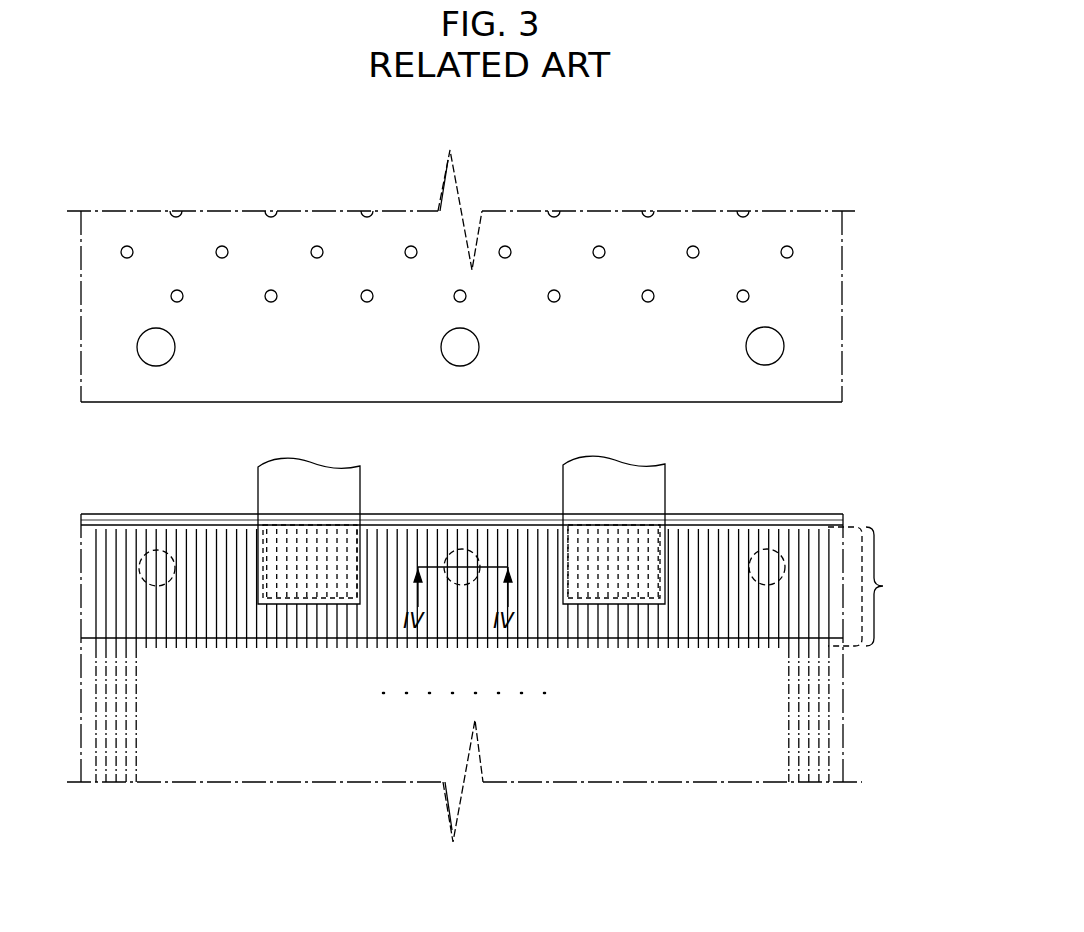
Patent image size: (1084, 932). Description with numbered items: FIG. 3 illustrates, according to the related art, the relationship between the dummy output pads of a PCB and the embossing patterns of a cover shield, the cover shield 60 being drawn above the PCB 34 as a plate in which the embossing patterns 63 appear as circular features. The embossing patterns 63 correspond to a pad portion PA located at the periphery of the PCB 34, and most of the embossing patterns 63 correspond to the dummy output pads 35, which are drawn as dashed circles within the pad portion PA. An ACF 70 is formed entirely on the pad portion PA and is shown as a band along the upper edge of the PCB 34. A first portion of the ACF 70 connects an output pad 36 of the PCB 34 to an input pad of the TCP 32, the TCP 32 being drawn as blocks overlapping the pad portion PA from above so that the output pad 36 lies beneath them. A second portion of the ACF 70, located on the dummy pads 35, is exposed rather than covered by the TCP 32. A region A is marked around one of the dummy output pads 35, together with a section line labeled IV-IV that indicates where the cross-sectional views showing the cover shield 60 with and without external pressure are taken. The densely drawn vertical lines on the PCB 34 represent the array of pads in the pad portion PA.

The cooling plate 60 is at (678, 190).
The embossing patterns 63 is at (455, 345).
The PCB 34 is at (835, 500).
The TCP 32 is at (648, 470).
The output pad 36 is at (608, 536).
The ACF 70 is at (727, 522).
The dummy output pads 35 is at (487, 548).
The region A is at (452, 552).
The pad portion PA is at (873, 586).